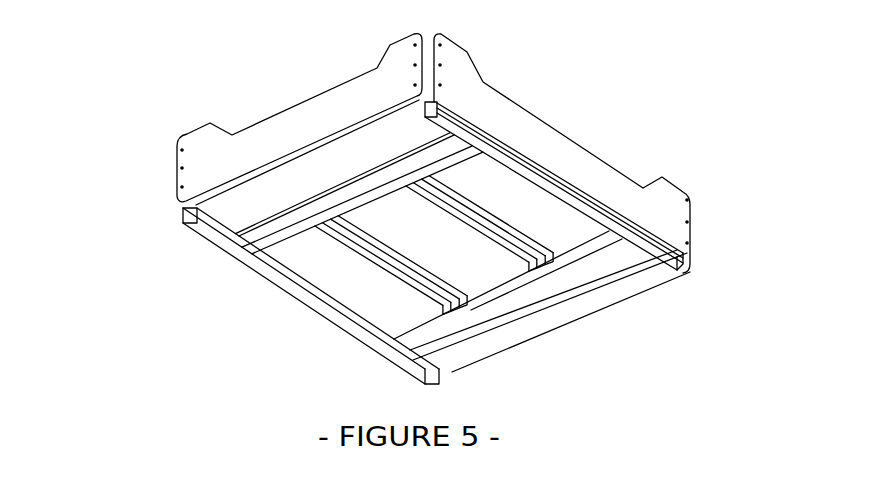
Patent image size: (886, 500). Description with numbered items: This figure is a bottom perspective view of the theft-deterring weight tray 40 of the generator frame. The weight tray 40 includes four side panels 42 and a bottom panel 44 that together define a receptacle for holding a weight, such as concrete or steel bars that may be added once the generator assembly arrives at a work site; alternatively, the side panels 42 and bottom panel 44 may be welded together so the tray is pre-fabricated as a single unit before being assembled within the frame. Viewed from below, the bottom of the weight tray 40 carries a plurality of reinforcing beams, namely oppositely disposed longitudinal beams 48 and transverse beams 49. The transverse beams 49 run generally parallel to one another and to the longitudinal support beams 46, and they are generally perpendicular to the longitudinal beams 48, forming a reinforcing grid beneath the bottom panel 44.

The weight tray 40 is at (703, 82).
The side panels 42 is at (458, 82).
The bottom panel 44 is at (295, 173).
The longitudinal support beams 46 is at (190, 227).
The longitudinal beams 48 is at (408, 344).
The transverse beams 49 is at (528, 258).